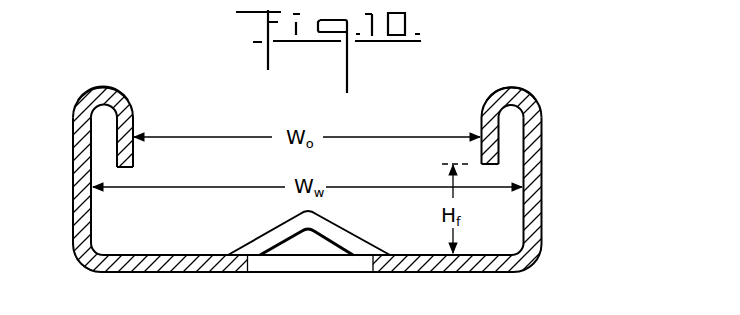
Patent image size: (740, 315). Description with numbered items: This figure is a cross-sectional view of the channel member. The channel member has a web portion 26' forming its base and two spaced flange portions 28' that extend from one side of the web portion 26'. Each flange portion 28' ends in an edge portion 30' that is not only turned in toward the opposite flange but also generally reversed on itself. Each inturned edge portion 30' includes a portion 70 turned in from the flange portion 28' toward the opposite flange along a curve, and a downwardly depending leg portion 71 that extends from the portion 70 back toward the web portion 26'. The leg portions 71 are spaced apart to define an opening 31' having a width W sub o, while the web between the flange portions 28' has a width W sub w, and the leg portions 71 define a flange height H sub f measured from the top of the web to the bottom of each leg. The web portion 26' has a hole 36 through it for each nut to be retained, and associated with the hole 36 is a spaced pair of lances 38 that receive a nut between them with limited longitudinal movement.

The web portion 26' is at (307, 275).
The flange portions 28' is at (315, 181).
The edge portion 30' is at (317, 104).
The opening 31' is at (310, 180).
The hole 36 is at (322, 263).
The lance 38 is at (279, 233).
The portion 70 is at (98, 96).
The leg portion 71 is at (124, 153).